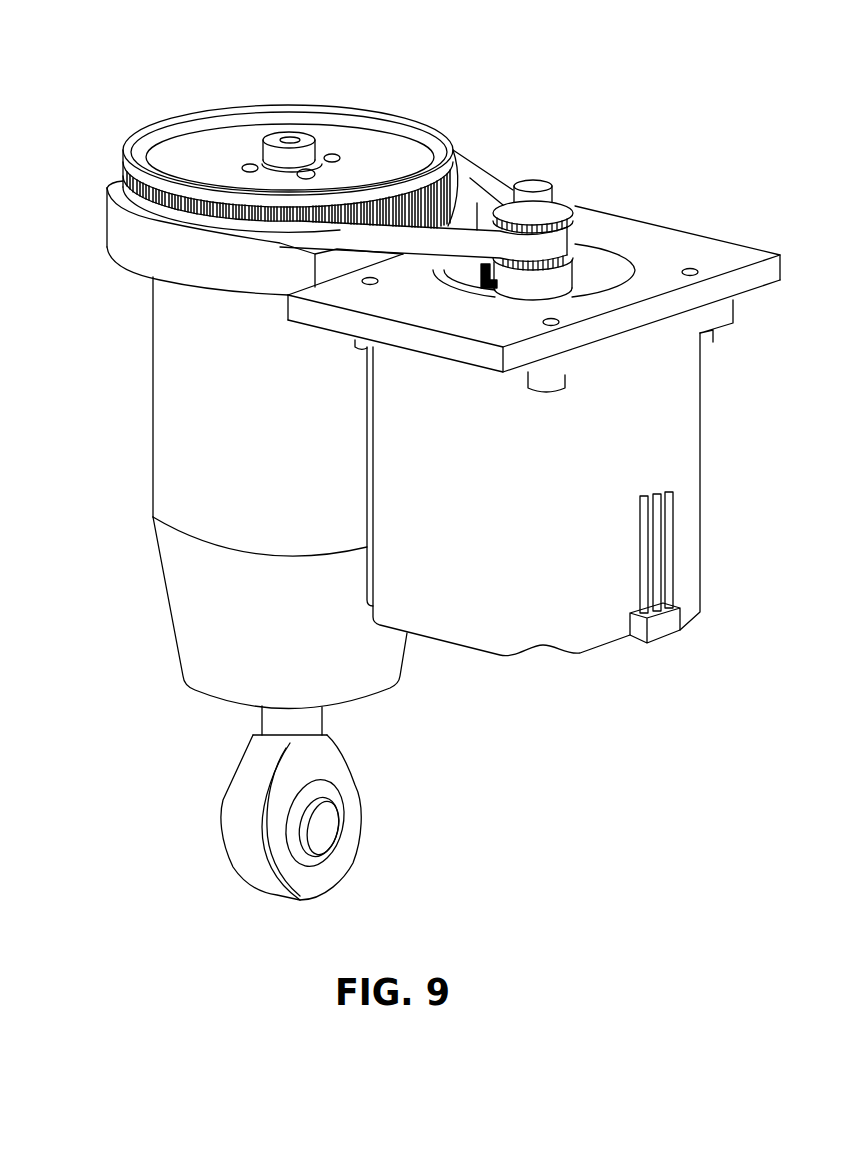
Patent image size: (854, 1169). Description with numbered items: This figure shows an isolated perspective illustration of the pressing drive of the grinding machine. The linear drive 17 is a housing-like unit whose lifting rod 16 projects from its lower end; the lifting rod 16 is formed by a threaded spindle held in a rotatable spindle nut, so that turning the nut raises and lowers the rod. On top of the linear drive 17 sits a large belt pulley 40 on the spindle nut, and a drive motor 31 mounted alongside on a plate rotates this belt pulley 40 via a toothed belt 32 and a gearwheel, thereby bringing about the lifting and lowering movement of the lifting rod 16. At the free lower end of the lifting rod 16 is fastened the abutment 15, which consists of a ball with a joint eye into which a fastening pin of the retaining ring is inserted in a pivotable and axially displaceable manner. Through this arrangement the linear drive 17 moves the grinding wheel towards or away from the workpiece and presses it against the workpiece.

The belt pulley 40 is at (342, 143).
The toothed belt 32 is at (478, 190).
The linear drive 17 is at (208, 460).
The drive motor 31 is at (678, 467).
The lifting rod 16 is at (303, 715).
The abutment 15 is at (318, 790).